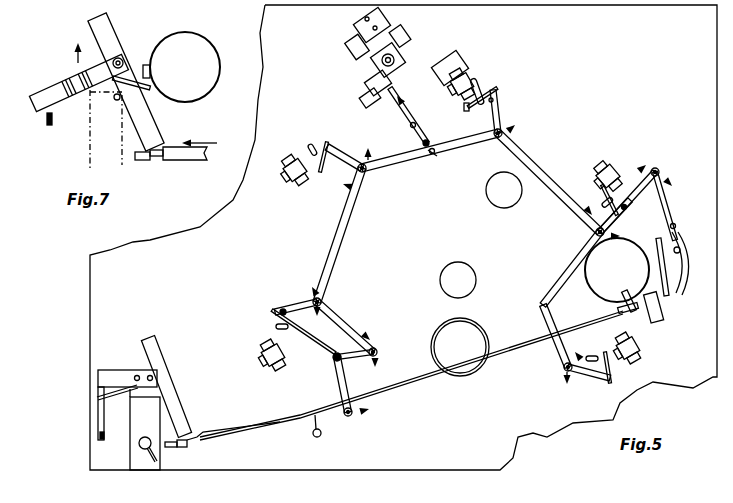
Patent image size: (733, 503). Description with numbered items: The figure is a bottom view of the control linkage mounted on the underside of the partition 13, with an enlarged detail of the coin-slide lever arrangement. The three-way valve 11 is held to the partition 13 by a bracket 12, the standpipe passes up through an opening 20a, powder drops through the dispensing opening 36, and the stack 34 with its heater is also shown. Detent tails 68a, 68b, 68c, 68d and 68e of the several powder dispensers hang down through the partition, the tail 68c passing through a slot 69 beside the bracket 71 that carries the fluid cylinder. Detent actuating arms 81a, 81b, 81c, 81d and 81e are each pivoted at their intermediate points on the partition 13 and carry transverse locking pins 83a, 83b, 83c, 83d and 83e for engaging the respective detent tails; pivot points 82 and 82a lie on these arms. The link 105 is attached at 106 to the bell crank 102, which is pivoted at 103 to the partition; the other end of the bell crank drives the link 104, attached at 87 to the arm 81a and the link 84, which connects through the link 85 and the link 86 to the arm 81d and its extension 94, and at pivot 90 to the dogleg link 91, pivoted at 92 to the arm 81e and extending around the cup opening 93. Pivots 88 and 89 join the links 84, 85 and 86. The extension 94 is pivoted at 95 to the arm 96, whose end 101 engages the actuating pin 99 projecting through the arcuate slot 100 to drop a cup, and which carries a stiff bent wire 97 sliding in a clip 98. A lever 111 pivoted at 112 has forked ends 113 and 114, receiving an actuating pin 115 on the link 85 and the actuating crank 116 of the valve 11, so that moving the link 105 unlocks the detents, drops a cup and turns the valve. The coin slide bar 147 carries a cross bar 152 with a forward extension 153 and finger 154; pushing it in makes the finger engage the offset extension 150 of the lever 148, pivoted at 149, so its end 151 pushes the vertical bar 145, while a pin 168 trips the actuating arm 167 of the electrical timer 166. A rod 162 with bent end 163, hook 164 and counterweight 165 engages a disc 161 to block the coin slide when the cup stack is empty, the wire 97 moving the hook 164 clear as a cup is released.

In FIG. 5, the three-way valve 11 is at (398, 60).
In FIG. 5, the bracket 12 is at (357, 26).
In FIG. 5, the partition 13 is at (90, 297).
In FIG. 5, the opening 20a is at (486, 193).
In FIG. 5, the stack 34 is at (437, 330).
In FIG. 5, the hole 36 is at (460, 262).
In FIG. 5, the detent tail 68a is at (300, 325).
In FIG. 5, the detent tail 68b is at (328, 170).
In FIG. 5, the detent tail 68c is at (463, 114).
In FIG. 5, the detent tail 68d is at (605, 202).
In FIG. 5, the detent tail 68e is at (592, 355).
In FIG. 5, the slot 69 is at (480, 83).
In FIG. 5, the bracket 71 is at (460, 58).
In FIG. 5, the detent actuating arm 81a is at (303, 293).
In FIG. 5, the detent actuating arm 81b is at (350, 155).
In FIG. 5, the detent actuating arm 81c is at (500, 117).
In FIG. 5, the detent actuating arm 81d is at (613, 219).
In FIG. 5, the detent actuating arm 81e is at (587, 373).
In FIG. 5, the pin 82 is at (283, 310).
In FIG. 5, the pin 82a is at (627, 207).
In FIG. 5, the locking pin 83a is at (334, 356).
In FIG. 5, the locking pin 83b is at (327, 143).
In FIG. 5, the locking pin 83c is at (487, 91).
In FIG. 5, the locking pin 83d is at (601, 185).
In FIG. 5, the locking pin 83e is at (614, 375).
In FIG. 5, the link 84 is at (328, 267).
In FIG. 5, the link 85 is at (403, 158).
In FIG. 5, the link 86 is at (563, 193).
In FIG. 5, the pivot connection 87 is at (322, 300).
In FIG. 5, the pivot 88 is at (363, 173).
In FIG. 5, the pivot 89 is at (497, 137).
In FIG. 5, the pivot 90 is at (595, 232).
In FIG. 5, the dogleg link 91 is at (555, 287).
In FIG. 5, the pivot 92 is at (564, 367).
In FIG. 5, the opening 93 is at (424, 140).
In FIG. 5, the extension 94 is at (630, 193).
In FIG. 5, the pivot 95 is at (656, 169).
In FIG. 5, the arm 96 is at (664, 205).
In FIG. 5, the stiff bent wire 97 is at (666, 292).
In FIG. 5, the clip 98 is at (655, 321).
In FIG. 5, the actuating pin 99 is at (680, 249).
In FIG. 5, the arcuate slot 100 is at (684, 273).
In FIG. 5, the end of arm 96 101 is at (675, 226).
In FIG. 5, the bell crank 102 is at (346, 378).
In FIG. 5, the pivot 103 is at (334, 360).
In FIG. 5, the link 104 is at (353, 323).
In FIG. 5, the link 105 is at (223, 428).
In FIG. 5, the attachment point 106 is at (351, 416).
In FIG. 5, the lever 111 is at (428, 140).
In FIG. 5, the pivot 112 is at (411, 125).
In FIG. 5, the forked end 113 is at (386, 98).
In FIG. 5, the forked end 114 is at (433, 156).
In FIG. 5, the actuating pin 115 is at (433, 149).
In FIG. 5, the actuating crank 116 is at (391, 81).
In FIG. 7, the vertical bar 145 is at (143, 157).
In FIG. 5, the vertical bar 145 is at (170, 448).
In FIG. 7, the slide bar 147 is at (90, 140).
In FIG. 5, the slide bar 147 is at (130, 390).
In FIG. 7, the lever 148 is at (147, 123).
In FIG. 5, the lever 148 is at (173, 405).
In FIG. 7, the pivot 149 is at (123, 57).
In FIG. 5, the pivot 149 is at (160, 368).
In FIG. 7, the offset extension 150 is at (57, 90).
In FIG. 5, the offset extension 150 is at (98, 389).
In FIG. 7, the end of lever 148 151 is at (143, 143).
In FIG. 5, the end of lever 148 151 is at (185, 447).
In FIG. 5, the cross bar 152 is at (117, 370).
In FIG. 5, the forward extension 153 is at (98, 415).
In FIG. 7, the finger 154 is at (53, 117).
In FIG. 5, the finger 154 is at (110, 430).
In FIG. 5, the disc 161 is at (145, 436).
In FIG. 5, the rod 162 is at (432, 378).
In FIG. 5, the bent end 163 is at (152, 461).
In FIG. 5, the hook 164 is at (630, 289).
In FIG. 5, the counterweight 165 is at (318, 437).
In FIG. 7, the electrical timer 166 is at (203, 50).
In FIG. 7, the actuating arm 167 is at (150, 62).
In FIG. 7, the pin 168 is at (160, 88).